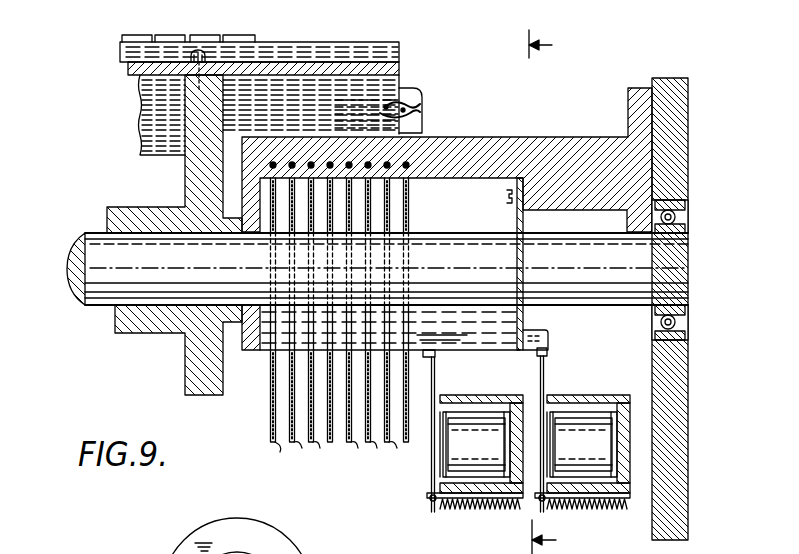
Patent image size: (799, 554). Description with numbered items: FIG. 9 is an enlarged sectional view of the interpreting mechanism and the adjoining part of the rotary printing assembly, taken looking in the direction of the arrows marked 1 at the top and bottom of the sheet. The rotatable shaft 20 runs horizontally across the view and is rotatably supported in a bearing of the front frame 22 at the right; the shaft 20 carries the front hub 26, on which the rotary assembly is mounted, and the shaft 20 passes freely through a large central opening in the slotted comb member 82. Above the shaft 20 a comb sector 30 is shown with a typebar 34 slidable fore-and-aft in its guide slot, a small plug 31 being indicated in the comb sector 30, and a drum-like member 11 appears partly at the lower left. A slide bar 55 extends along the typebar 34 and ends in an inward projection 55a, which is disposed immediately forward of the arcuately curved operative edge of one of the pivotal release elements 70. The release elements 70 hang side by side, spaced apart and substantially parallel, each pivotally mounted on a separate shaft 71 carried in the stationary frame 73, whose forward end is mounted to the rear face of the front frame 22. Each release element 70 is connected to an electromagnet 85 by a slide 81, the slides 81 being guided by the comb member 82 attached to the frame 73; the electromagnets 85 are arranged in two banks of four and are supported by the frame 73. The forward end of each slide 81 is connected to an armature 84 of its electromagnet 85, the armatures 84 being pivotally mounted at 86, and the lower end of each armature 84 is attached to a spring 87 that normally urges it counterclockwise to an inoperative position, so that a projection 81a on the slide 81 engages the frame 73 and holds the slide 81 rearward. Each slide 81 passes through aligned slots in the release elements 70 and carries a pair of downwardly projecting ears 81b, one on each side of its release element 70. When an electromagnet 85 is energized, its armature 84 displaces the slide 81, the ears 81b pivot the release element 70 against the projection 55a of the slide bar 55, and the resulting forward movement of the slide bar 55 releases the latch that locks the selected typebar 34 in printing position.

The typebar 34 is at (125, 44).
The comb sector 30 is at (130, 64).
The screw plug 31 is at (201, 50).
The front hub 26 is at (185, 184).
The stationary frame 73 is at (578, 137).
The slide bar 55 is at (410, 90).
The inward projection 55a is at (422, 113).
The front frame 22 is at (689, 151).
The shaft 20 is at (643, 258).
The slotted comb member 82 is at (526, 321).
The projection 81a is at (270, 336).
The slide 81 is at (482, 350).
The downwardly projecting ear 81b is at (413, 340).
The shaft 71 is at (409, 167).
The pivotal release element 70 is at (410, 186).
The armature 84 is at (436, 374).
The electromagnet 85 is at (491, 412).
The pivot 86 is at (430, 494).
The spring 87 is at (480, 508).
The drum 11 is at (292, 541).
The section view direction 1 is at (543, 287).